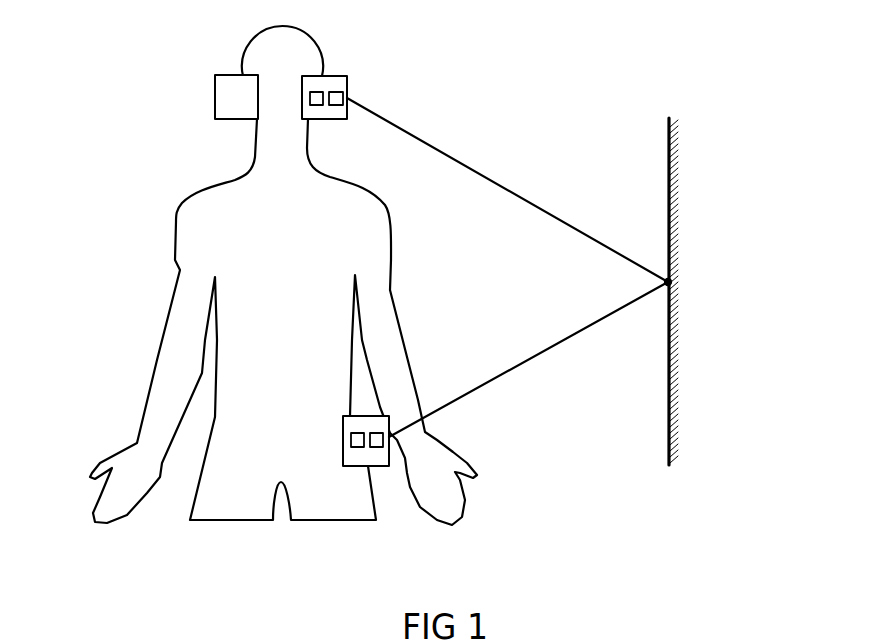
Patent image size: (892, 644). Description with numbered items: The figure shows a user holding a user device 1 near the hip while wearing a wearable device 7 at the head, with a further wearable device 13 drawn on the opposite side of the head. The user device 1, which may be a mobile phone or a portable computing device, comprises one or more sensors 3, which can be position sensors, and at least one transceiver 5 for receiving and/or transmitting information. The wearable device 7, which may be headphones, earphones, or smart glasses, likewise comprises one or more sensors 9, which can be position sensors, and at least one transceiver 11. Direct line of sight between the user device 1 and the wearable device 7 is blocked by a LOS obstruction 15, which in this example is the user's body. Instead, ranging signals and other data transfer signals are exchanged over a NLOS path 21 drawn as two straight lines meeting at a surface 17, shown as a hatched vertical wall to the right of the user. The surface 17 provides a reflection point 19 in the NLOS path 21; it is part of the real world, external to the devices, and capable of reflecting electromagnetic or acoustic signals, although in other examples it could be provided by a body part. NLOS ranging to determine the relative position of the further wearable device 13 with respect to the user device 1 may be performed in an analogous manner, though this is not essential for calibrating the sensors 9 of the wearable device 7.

The user device 1 is at (357, 469).
The sensors 3 is at (355, 432).
The transceiver 5 is at (378, 447).
The wearable device 7 is at (335, 107).
The sensors 9 is at (312, 88).
The transceiver 11 is at (337, 105).
The further wearable device 13 is at (215, 96).
The LOS obstruction 15 is at (188, 285).
The surface 17 is at (679, 205).
The reflection point 19 is at (673, 282).
The NLOS path 21 is at (577, 237).